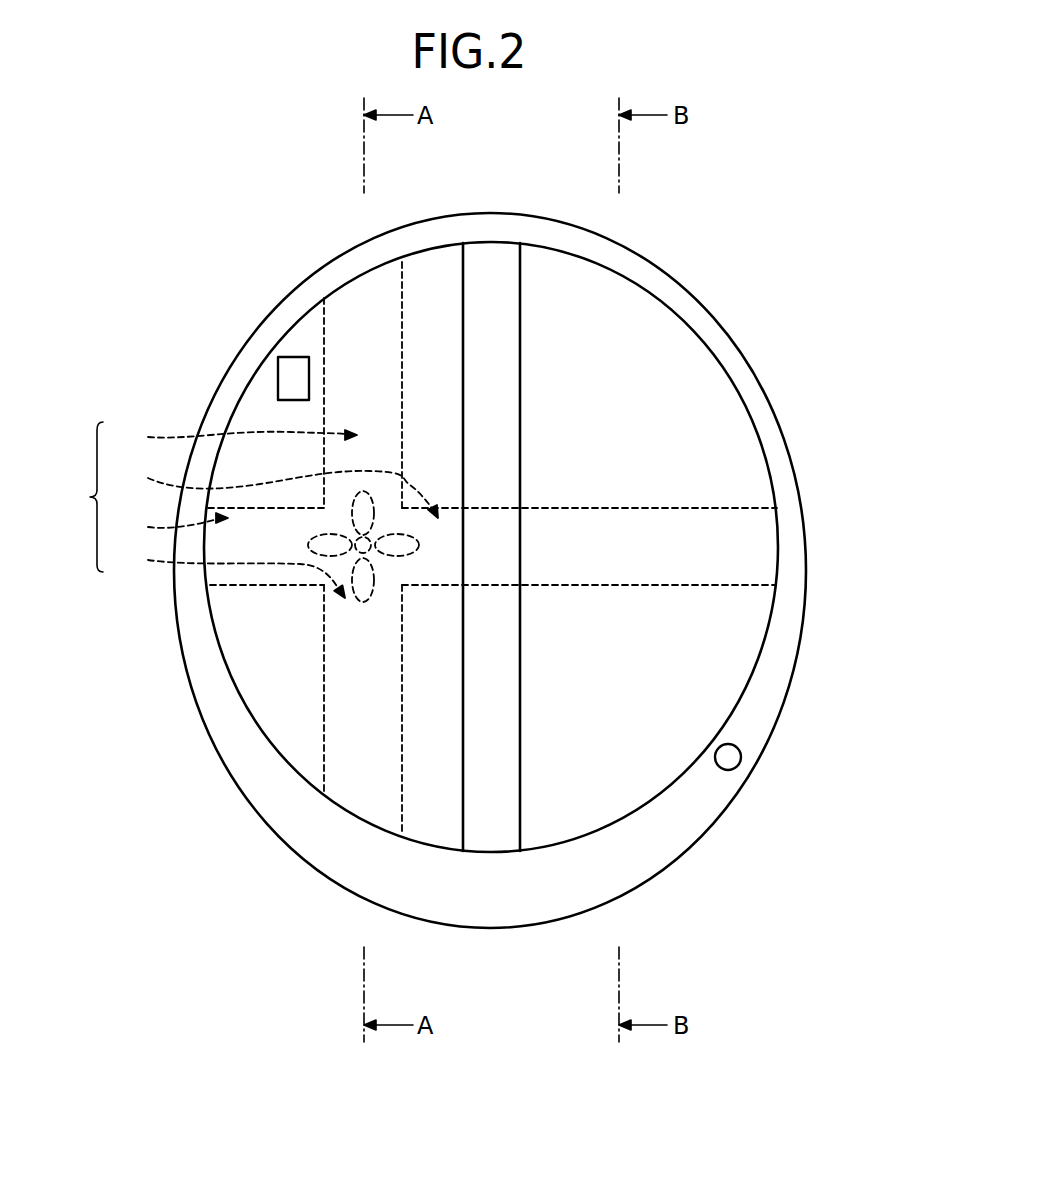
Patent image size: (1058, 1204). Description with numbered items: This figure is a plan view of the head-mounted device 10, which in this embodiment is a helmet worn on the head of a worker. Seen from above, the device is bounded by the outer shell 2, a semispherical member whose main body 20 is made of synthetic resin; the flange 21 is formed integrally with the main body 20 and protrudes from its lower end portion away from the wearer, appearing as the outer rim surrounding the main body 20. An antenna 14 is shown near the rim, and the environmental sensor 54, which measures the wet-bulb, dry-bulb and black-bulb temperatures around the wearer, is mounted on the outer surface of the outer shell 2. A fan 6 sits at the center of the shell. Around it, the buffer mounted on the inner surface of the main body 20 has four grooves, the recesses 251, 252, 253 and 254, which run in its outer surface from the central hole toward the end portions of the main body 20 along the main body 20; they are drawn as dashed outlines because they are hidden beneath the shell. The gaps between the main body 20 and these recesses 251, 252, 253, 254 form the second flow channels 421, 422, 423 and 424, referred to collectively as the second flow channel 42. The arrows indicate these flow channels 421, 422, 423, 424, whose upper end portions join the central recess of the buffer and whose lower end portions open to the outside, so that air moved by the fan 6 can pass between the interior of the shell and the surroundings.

The head-mounted device 10 is at (745, 195).
The outer shell 2 is at (712, 378).
The main body 20 is at (700, 432).
The flange 21 is at (658, 837).
The antenna 14 is at (741, 750).
The environmental sensor 54 is at (295, 365).
The fan 6 is at (363, 600).
The second flow channel 42 is at (80, 497).
The second flow channel 421 is at (226, 571).
The second flow channel 422 is at (232, 439).
The second flow channel 423 is at (168, 525).
The second flow channel 424 is at (273, 490).
The recess 251 is at (328, 700).
The recess 252 is at (325, 353).
The recess 253 is at (290, 585).
The recess 254 is at (713, 509).